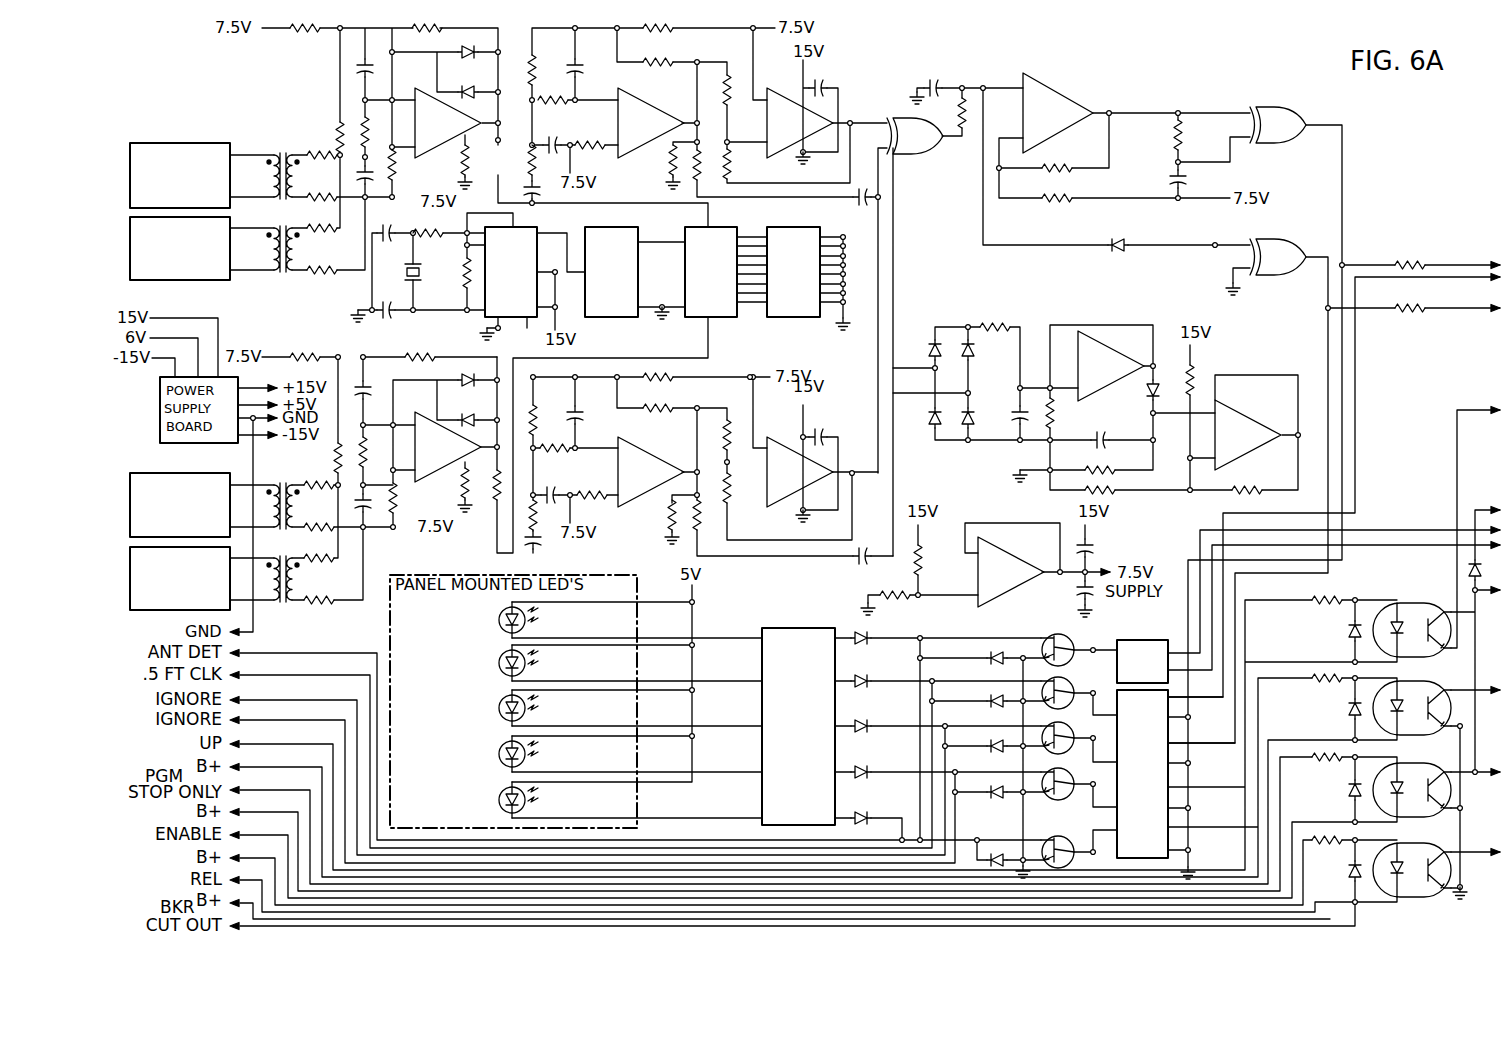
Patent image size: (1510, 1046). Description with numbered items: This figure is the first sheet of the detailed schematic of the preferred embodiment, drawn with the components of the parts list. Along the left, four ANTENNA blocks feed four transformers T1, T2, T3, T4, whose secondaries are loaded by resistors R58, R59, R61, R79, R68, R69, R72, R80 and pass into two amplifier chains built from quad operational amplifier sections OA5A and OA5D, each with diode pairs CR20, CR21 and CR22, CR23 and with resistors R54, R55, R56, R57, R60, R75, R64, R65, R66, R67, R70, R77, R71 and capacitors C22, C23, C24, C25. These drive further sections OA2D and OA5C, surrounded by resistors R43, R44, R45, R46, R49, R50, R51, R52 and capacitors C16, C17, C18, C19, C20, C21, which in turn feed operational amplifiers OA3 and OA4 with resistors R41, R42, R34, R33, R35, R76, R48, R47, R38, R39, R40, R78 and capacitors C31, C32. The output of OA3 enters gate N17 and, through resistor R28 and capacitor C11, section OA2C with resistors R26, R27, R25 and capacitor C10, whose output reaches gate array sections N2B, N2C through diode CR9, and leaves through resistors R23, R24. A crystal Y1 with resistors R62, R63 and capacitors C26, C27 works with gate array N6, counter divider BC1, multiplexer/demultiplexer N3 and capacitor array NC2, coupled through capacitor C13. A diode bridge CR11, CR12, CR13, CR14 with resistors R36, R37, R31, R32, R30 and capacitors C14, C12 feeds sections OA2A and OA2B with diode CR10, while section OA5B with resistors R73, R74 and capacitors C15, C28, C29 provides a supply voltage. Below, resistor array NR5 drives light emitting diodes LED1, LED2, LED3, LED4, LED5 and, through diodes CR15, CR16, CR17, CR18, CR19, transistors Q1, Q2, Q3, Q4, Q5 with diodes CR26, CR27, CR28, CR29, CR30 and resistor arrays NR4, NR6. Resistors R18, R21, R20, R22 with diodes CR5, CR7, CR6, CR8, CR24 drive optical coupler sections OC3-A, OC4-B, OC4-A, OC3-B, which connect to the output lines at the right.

The transformer T1 is at (273, 162).
The transformer T2 is at (275, 237).
The transformer T3 is at (278, 492).
The transformer T4 is at (276, 566).
The resistor R55 is at (292, 39).
The resistor R54 is at (410, 35).
The resistor R56 is at (320, 125).
The resistor R57 is at (381, 122).
The resistor R58 is at (310, 137).
The resistor R59 is at (318, 184).
The resistor R61 is at (309, 217).
The resistor R79 is at (311, 277).
The resistor R60 is at (407, 173).
The resistor R75 is at (441, 160).
The resistor R62 is at (431, 245).
The resistor R63 is at (445, 279).
The resistor R43 is at (548, 59).
The resistor R44 is at (587, 86).
The resistor R45 is at (551, 140).
The resistor R46 is at (590, 158).
The resistor R42 is at (677, 19).
The resistor R41 is at (646, 51).
The resistor R34 is at (711, 71).
The resistor R33 is at (751, 165).
The resistor R35 is at (665, 175).
The resistor R76 is at (657, 160).
The resistor R28 is at (941, 134).
The resistor R26 is at (1066, 158).
The resistor R27 is at (1066, 189).
The resistor R25 is at (1154, 133).
The resistor R23 is at (1401, 250).
The resistor R24 is at (1305, 350).
The resistor R36 is at (980, 316).
The resistor R37 is at (1042, 393).
The resistor R31 is at (1110, 458).
The resistor R32 is at (1110, 481).
The resistor R30 is at (1253, 479).
The resistor R64 is at (431, 346).
The resistor R65 is at (294, 344).
The resistor R66 is at (312, 458).
The resistor R67 is at (382, 448).
The resistor R68 is at (308, 475).
The resistor R69 is at (312, 535).
The resistor R72 is at (323, 569).
The resistor R80 is at (324, 609).
The resistor R70 is at (416, 501).
The resistor R77 is at (437, 484).
The resistor R71 is at (479, 506).
The resistor R49 is at (548, 407).
The resistor R50 is at (584, 433).
The resistor R51 is at (562, 530).
The resistor R52 is at (586, 486).
The resistor R48 is at (677, 368).
The resistor R47 is at (669, 398).
The resistor R38 is at (728, 416).
The resistor R39 is at (747, 505).
The resistor R40 is at (665, 532).
The resistor R78 is at (644, 515).
The resistor R74 is at (876, 585).
The resistor R73 is at (936, 568).
The resistor R18 is at (1311, 591).
The resistor R21 is at (1308, 668).
The resistor R20 is at (1316, 767).
The resistor R22 is at (1316, 824).
The capacitor C22 is at (331, 69).
The capacitor C23 is at (386, 151).
The capacitor C27 is at (391, 219).
The capacitor C26 is at (404, 317).
The capacitor C16 is at (588, 58).
The capacitor C17 is at (576, 136).
The capacitor C18 is at (553, 201).
The capacitor C31 is at (842, 76).
The capacitor C11 is at (923, 72).
The capacitor C13 is at (838, 203).
The capacitor C10 is at (1155, 171).
The capacitor C24 is at (349, 365).
The capacitor C25 is at (383, 481).
The capacitor C19 is at (588, 404).
The capacitor C20 is at (554, 478).
The capacitor C21 is at (541, 552).
The capacitor C32 is at (842, 423).
The capacitor C14 is at (1003, 424).
The capacitor C12 is at (1083, 429).
The capacitor C15 is at (871, 540).
The capacitor C28 is at (1103, 540).
The capacitor C29 is at (1055, 596).
The diode CR20 is at (495, 32).
The diode CR21 is at (436, 77).
The diode CR22 is at (429, 373).
The diode CR23 is at (458, 412).
The diode CR9 is at (1099, 232).
The diode CR11 is at (919, 339).
The diode CR12 is at (988, 358).
The diode CR13 is at (988, 401).
The diode CR14 is at (926, 438).
The diode CR10 is at (1122, 397).
The diode CR15 is at (835, 625).
The diode CR16 is at (877, 667).
The diode CR17 is at (877, 714).
The diode CR18 is at (880, 759).
The diode CR19 is at (878, 805).
The diode CR26 is at (969, 650).
The diode CR27 is at (971, 694).
The diode CR28 is at (971, 725).
The diode CR29 is at (983, 811).
The diode CR30 is at (1022, 843).
The diode CR5 is at (1335, 622).
The diode CR7 is at (1335, 701).
The diode CR6 is at (1325, 792).
The diode CR8 is at (1340, 881).
The diode CR24 is at (1438, 567).
The quad operational amplifier section OA5A is at (448, 123).
The quad operational amplifier section OA2D is at (651, 123).
The operational amplifier OA3 is at (800, 123).
The quad operational amplifier section OA2C is at (1058, 113).
The quad operational amplifier section OA2A is at (1111, 366).
The quad operational amplifier section OA2B is at (1248, 435).
The quad operational amplifier section OA5D is at (448, 447).
The quad operational amplifier section OA5C is at (651, 472).
The operational amplifier OA4 is at (800, 472).
The quad operational amplifier section OA5B is at (1011, 572).
The exclusive-OR gate N17 is at (904, 125).
The gate array section N2B is at (1274, 113).
The gate array section N2C is at (1273, 245).
The gate array N6 is at (511, 272).
The counter divider BC1 is at (611, 272).
The multiplexer/demultiplexer N3 is at (711, 272).
The capacitor array NC2 is at (793, 272).
The resistor array NR5 is at (798, 726).
The resistor array NR4 is at (1142, 661).
The resistor array NR6 is at (1142, 774).
The crystal Y1 is at (400, 266).
The light emitting diode LED1 is at (499, 620).
The light emitting diode LED2 is at (499, 663).
The light emitting diode LED3 is at (499, 708).
The light emitting diode LED4 is at (499, 754).
The light emitting diode LED5 is at (499, 800).
The transistor Q1 is at (1052, 637).
The transistor Q2 is at (1073, 689).
The transistor Q3 is at (1073, 734).
The transistor Q4 is at (1073, 780).
The transistor Q5 is at (1072, 855).
The optical coupler section OC3-A is at (1412, 616).
The optical coupler section OC4-B is at (1412, 694).
The optical coupler section OC4-A is at (1412, 776).
The optical coupler section OC3-B is at (1412, 859).
The antenna ANTENNA is at (180, 376).